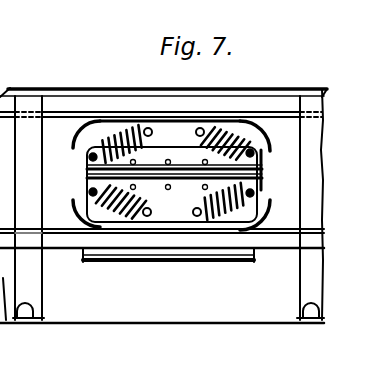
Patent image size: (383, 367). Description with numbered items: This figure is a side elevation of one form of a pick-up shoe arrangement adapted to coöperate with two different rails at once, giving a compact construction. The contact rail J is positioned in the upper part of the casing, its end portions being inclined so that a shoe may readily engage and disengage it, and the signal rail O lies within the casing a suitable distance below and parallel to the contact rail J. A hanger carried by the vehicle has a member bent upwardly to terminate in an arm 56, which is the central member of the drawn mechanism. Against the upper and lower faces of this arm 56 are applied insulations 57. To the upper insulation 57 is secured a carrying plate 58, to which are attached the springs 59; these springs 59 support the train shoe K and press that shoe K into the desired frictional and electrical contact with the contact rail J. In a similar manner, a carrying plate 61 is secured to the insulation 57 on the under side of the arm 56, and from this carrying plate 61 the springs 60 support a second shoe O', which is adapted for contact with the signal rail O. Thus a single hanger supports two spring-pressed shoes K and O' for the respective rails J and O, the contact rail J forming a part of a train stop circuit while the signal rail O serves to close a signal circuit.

The contact rail J is at (70, 108).
The train shoe K is at (80, 137).
The arm 56 is at (258, 172).
The insulations 57 is at (88, 173).
The carrying plate 58 is at (152, 162).
The springs 59 is at (116, 148).
The springs 60 is at (115, 202).
The carrying plate 61 is at (162, 187).
The signal rail O is at (68, 267).
The signal contact shoe O' is at (271, 255).